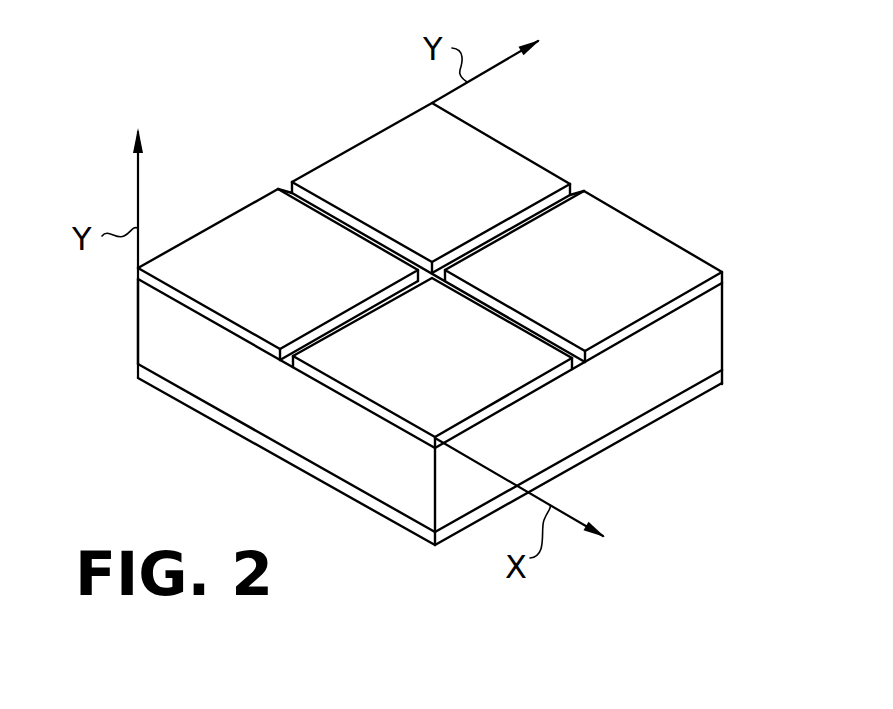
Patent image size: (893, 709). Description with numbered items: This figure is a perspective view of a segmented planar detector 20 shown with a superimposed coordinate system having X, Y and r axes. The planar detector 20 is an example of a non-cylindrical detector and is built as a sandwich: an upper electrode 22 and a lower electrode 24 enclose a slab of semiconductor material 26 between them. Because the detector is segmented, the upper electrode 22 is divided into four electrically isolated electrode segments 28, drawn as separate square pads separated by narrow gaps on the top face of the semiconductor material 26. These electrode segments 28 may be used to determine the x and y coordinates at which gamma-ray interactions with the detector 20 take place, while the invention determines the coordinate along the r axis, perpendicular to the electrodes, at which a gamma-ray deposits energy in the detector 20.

The planar detector 20 is at (638, 84).
The electrode 22 is at (725, 281).
The electrode 24 is at (723, 373).
The semiconductor material 26 is at (697, 347).
The electrode segments 28 is at (538, 182).